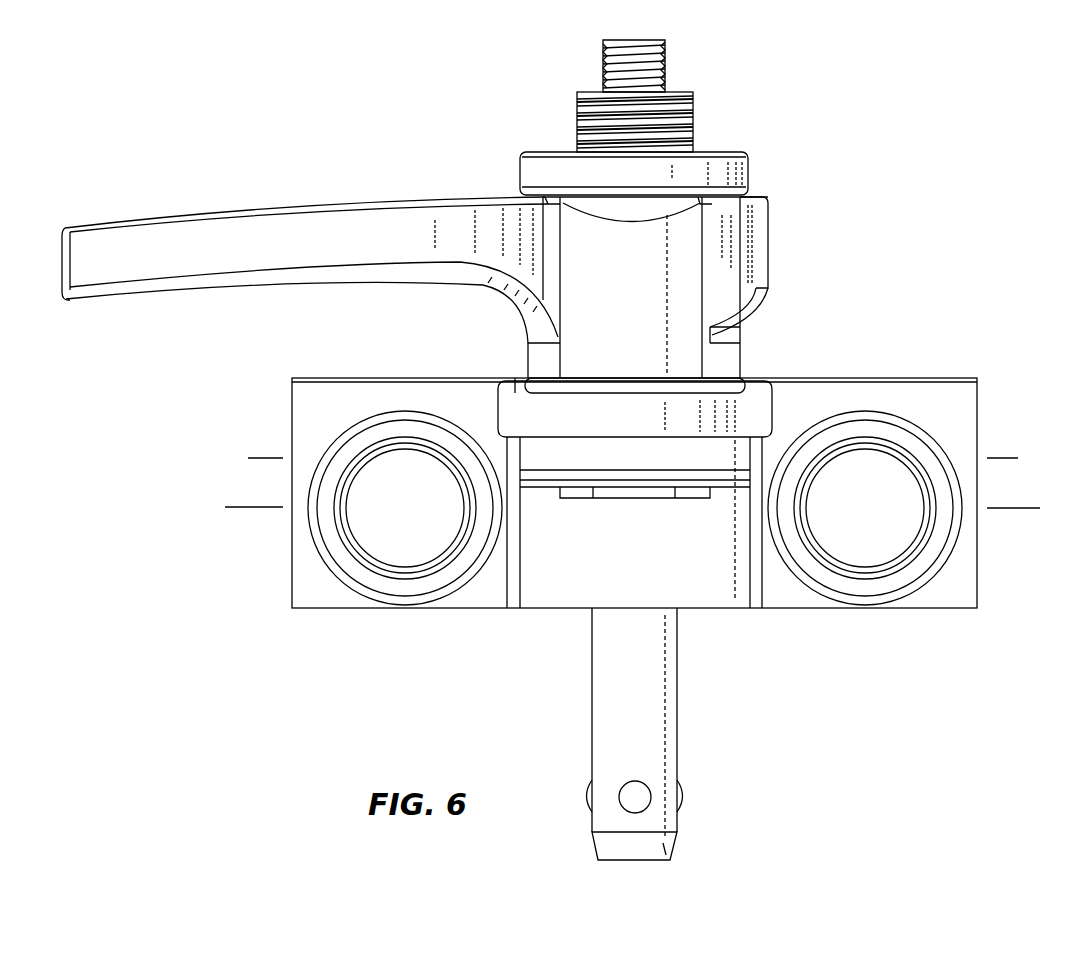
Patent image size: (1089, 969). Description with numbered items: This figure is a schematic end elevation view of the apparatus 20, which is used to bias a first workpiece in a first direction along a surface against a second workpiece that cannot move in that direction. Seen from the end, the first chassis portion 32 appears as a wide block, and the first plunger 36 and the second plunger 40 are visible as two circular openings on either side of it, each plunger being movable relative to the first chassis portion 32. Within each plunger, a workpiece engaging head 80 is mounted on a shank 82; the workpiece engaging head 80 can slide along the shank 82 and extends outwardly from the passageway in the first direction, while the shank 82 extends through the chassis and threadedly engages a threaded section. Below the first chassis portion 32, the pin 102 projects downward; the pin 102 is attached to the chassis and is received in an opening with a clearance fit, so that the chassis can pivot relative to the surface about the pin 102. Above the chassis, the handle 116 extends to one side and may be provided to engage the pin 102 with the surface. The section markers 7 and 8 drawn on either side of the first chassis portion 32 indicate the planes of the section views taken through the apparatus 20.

The apparatus 20 is at (913, 233).
The handle 116 is at (262, 237).
The first chassis portion 32 is at (935, 390).
The first plunger 36 is at (347, 583).
The second plunger 40 is at (923, 582).
The workpiece engaging head 80 is at (455, 570).
The shank 82 is at (396, 532).
The pin 102 is at (642, 850).
The section line 8- 8 is at (1003, 460).
The section line 7- 7 is at (1027, 510).